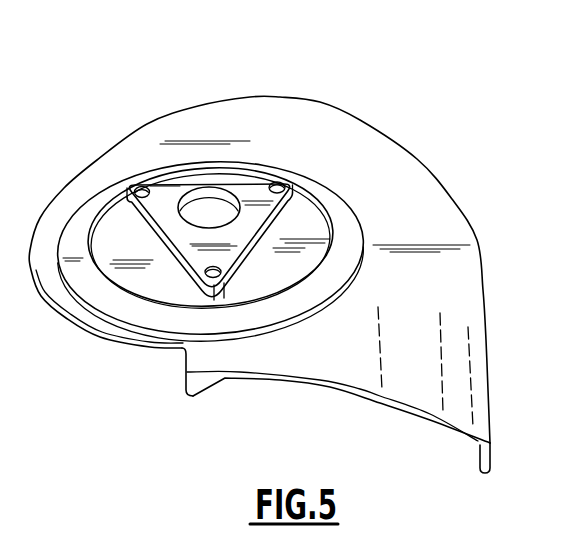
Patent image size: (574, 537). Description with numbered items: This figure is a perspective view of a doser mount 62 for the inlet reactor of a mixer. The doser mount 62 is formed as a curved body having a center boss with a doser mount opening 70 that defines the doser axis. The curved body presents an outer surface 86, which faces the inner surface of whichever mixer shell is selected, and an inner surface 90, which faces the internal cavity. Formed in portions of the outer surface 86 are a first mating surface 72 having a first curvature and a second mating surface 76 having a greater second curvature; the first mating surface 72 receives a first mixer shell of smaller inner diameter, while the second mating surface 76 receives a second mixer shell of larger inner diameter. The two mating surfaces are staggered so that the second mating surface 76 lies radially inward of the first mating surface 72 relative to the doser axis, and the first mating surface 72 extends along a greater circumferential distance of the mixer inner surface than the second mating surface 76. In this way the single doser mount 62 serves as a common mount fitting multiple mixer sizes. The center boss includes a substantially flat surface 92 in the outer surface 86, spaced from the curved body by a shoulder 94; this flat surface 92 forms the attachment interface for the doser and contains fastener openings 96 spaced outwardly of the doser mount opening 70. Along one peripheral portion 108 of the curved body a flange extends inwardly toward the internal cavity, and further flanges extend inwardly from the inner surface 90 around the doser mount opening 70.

The doser mount 62 is at (419, 74).
The outer surface 86 is at (402, 178).
The first mating surface 72 is at (415, 327).
The peripheral portion 108 is at (492, 408).
The inner surface 90 is at (270, 393).
The second mating surface 76 is at (350, 240).
The flat surface 92 is at (163, 205).
The shoulder 94 is at (294, 203).
The doser mount opening 70 is at (208, 203).
The fastener openings 96 is at (134, 188).